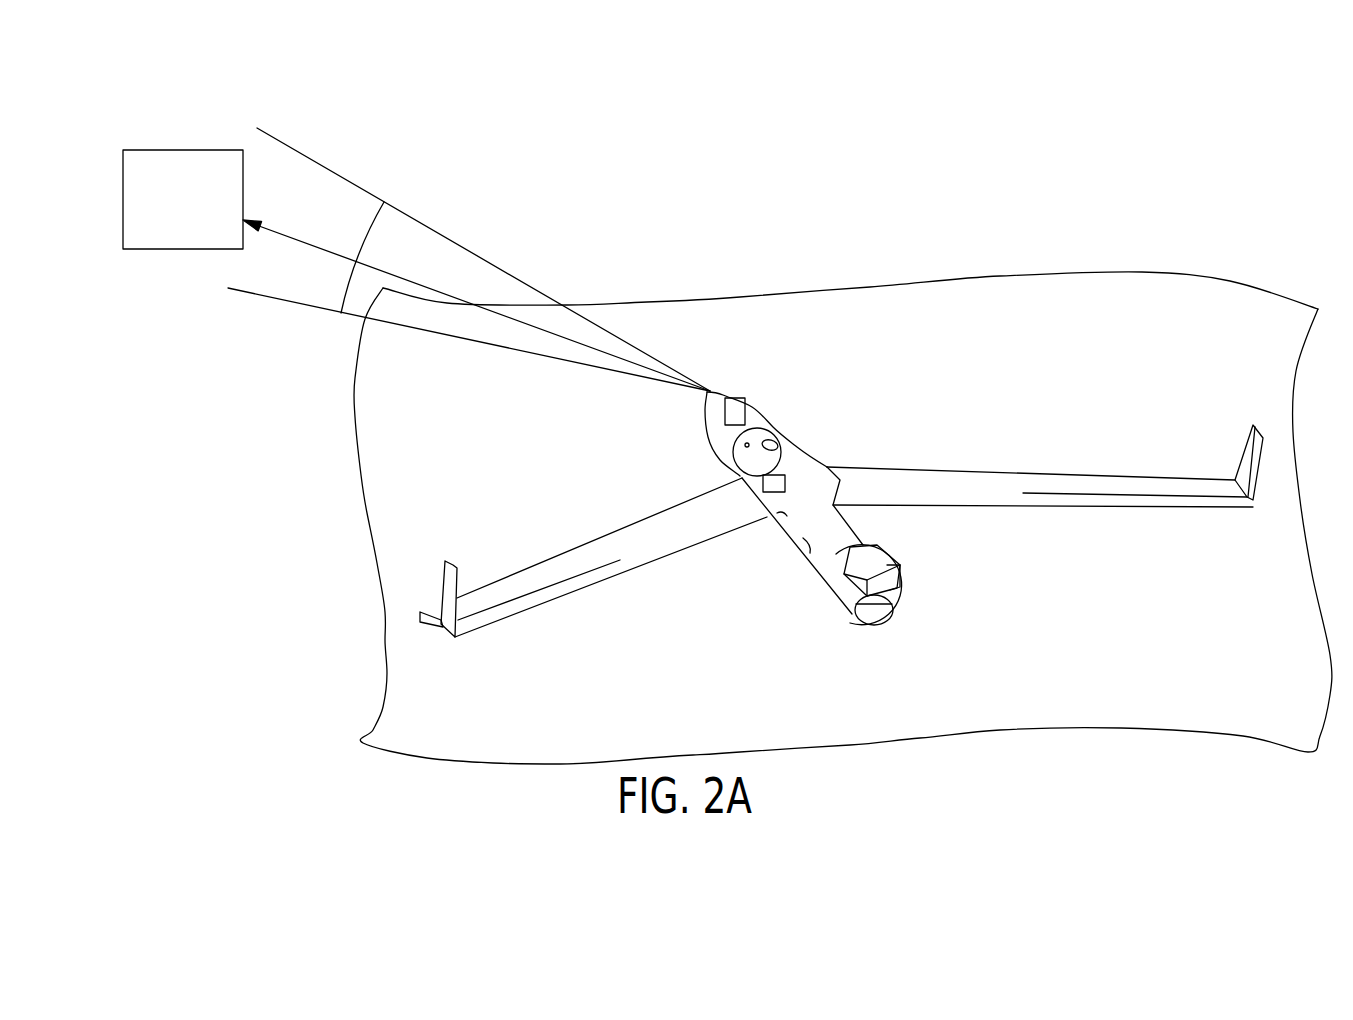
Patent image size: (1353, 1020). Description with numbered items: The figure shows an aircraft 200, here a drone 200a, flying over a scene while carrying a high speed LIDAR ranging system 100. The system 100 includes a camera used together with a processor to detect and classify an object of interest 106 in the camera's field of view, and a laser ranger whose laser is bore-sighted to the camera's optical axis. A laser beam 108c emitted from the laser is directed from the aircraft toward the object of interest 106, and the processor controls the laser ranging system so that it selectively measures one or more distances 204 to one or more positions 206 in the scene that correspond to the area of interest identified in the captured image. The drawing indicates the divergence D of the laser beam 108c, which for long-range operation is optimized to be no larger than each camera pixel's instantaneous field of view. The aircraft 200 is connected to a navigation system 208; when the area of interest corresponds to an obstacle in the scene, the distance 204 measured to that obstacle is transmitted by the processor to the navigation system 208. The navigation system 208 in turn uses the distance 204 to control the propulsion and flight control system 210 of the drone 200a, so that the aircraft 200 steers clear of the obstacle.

The system 100 is at (736, 382).
The object of interest 106 is at (199, 211).
The laser beam 108c is at (543, 289).
The aircraft 200 is at (960, 362).
The drone 200a is at (1085, 396).
The distance 204 is at (469, 259).
The position 206 is at (159, 152).
The navigation system 208 is at (742, 473).
The propulsion and flight control system 210 is at (856, 641).
The divergence D is at (353, 225).